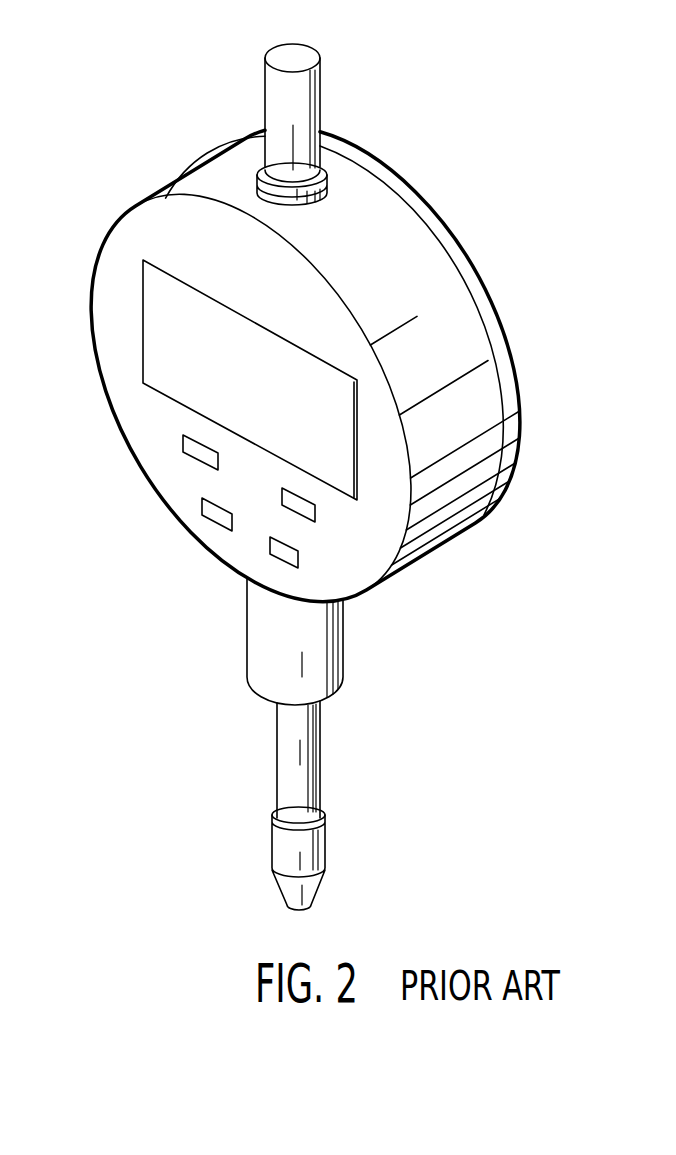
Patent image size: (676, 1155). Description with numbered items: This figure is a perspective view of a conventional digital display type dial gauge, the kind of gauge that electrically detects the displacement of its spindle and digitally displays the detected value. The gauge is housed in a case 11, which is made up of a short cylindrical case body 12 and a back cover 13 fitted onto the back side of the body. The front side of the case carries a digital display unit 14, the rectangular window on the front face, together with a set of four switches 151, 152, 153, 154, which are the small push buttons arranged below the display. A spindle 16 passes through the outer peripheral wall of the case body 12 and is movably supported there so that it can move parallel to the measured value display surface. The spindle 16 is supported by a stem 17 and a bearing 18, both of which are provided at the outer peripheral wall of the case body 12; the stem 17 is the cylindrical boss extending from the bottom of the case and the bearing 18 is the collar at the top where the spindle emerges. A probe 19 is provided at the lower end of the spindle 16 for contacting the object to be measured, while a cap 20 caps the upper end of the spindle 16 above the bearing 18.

The case 11 is at (521, 175).
The case body 12 is at (385, 202).
The back cover 13 is at (437, 230).
The digital display unit 14 is at (143, 354).
The switch 151 is at (207, 520).
The switch 152 is at (273, 560).
The switch 153 is at (192, 460).
The switch 154 is at (316, 522).
The spindle 16 is at (310, 763).
The stem 17 is at (342, 675).
The bearing 18 is at (337, 173).
The probe 19 is at (307, 909).
The cap 20 is at (320, 64).